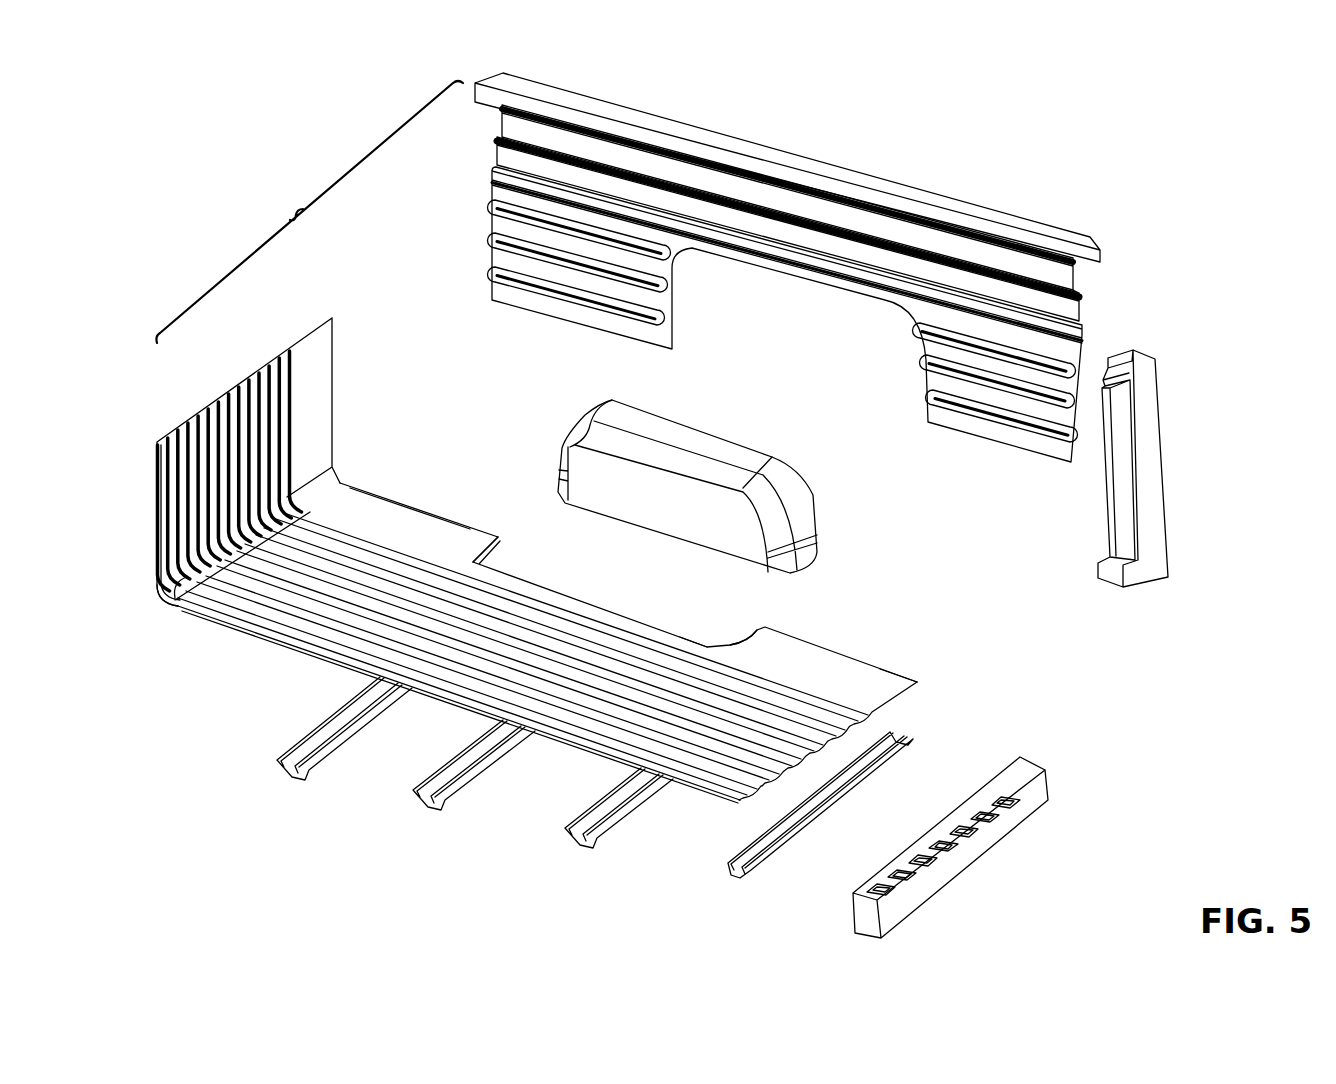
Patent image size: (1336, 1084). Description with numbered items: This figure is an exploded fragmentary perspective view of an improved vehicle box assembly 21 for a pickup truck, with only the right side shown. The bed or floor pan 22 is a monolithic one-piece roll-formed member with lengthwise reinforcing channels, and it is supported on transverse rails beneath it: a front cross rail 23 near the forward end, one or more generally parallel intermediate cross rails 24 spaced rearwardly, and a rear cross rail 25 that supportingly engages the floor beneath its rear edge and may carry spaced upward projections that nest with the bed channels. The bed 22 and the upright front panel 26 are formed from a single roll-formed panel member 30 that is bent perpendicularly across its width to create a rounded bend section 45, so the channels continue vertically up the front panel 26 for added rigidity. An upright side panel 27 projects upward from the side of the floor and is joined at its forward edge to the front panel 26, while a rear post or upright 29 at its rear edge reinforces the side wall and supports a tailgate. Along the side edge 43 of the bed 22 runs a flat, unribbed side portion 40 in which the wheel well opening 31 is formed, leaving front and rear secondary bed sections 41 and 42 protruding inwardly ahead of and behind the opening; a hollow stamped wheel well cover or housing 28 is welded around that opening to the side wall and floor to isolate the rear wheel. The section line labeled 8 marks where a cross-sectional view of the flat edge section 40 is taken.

The vehicle box assembly 21 is at (309, 212).
The bed or floor pan 22 is at (420, 505).
The front cross rail 23 is at (328, 763).
The intermediate cross rail 24 is at (467, 782).
The rear cross rail 25 is at (988, 800).
The upright front panel 26 is at (336, 384).
The upright side panel 27 is at (545, 316).
The wheel well cover or housing 28 is at (805, 515).
The rear post or upright 29 is at (1148, 450).
The monolithic one-piece panel member 30 is at (546, 558).
The wheel well opening 31 is at (713, 647).
The side portion or flat edge section 40 is at (918, 681).
The front secondary bed section 41 is at (370, 515).
The rear secondary bed section 42 is at (764, 637).
The side edge 43 is at (481, 538).
The bend section 45 is at (187, 577).
The section line 8- 8 is at (900, 662).